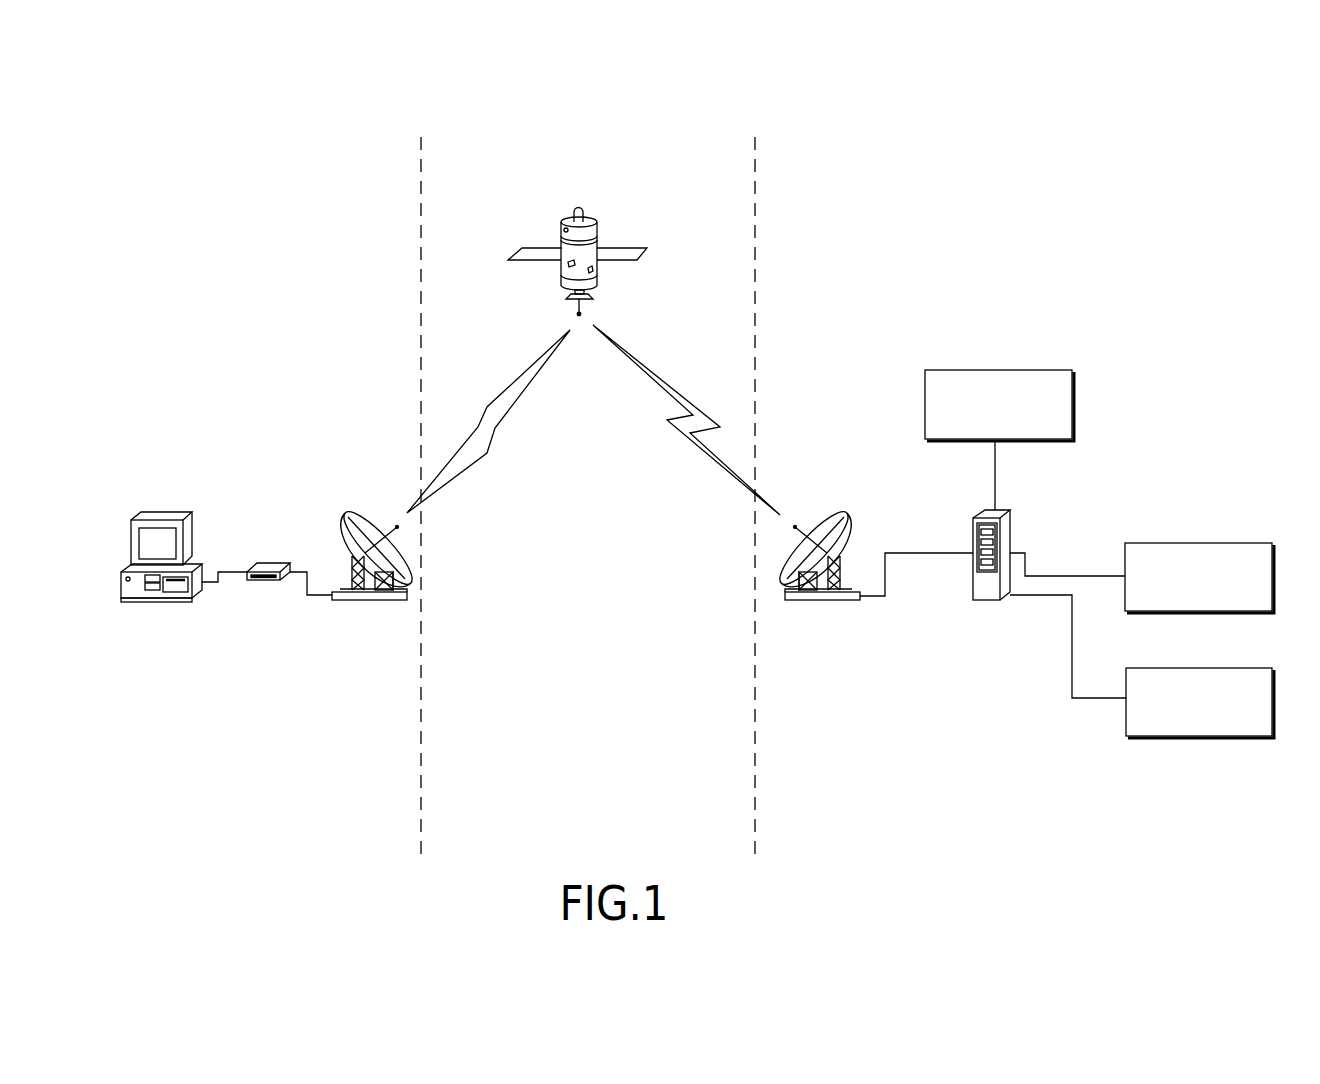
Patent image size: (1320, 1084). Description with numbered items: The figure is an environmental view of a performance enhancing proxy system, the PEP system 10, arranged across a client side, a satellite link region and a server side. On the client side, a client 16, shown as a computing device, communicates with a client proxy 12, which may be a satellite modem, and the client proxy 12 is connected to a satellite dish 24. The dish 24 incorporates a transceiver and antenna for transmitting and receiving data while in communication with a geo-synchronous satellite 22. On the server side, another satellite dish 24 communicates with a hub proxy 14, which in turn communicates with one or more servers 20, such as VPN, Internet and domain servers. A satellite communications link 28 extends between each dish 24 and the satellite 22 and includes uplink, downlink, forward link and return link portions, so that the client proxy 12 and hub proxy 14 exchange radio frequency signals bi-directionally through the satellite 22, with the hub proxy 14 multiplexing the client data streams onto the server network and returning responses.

The PEP system 10 is at (312, 317).
The client proxy 12 is at (271, 563).
The hub proxy 14 is at (1012, 528).
The client 16 is at (163, 515).
The servers 20 is at (1123, 416).
The geo-synchronous satellite 22 is at (605, 238).
The satellite dish 24 is at (380, 513).
The satellite communications link 28 is at (478, 408).